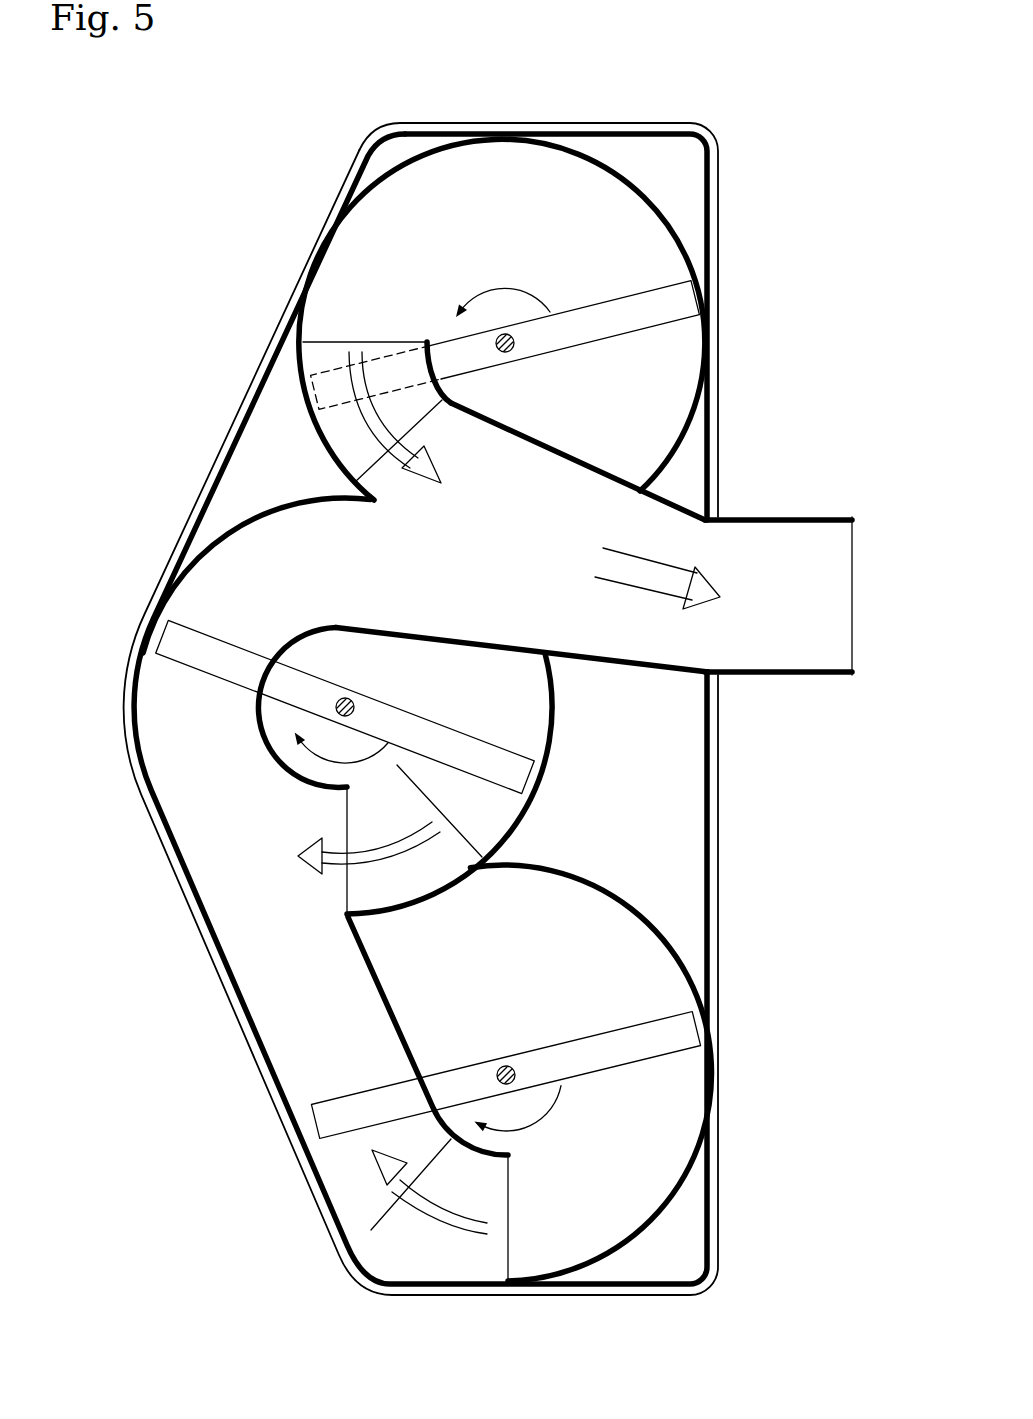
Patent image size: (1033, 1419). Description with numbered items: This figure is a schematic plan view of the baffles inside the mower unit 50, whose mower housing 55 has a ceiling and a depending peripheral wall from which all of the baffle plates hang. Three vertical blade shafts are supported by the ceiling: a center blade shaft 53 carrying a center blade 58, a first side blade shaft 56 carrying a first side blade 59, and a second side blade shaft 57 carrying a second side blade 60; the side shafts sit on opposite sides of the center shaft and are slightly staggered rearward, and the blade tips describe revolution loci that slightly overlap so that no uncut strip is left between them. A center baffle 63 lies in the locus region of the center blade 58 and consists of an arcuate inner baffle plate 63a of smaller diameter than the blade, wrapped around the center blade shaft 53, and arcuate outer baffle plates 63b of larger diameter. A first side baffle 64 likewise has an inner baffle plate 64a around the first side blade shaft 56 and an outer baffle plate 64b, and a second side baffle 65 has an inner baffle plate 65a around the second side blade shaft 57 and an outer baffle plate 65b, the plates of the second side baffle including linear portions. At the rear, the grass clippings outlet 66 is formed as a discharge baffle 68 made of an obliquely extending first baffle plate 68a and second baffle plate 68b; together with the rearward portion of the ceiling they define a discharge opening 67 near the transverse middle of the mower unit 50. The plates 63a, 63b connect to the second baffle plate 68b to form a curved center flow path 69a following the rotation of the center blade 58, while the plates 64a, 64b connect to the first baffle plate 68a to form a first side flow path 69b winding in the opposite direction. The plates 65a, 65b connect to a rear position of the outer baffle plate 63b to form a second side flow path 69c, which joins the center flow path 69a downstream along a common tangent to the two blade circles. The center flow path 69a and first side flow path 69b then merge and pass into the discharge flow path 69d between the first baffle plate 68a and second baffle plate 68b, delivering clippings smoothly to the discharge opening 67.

The mower unit 50 is at (182, 452).
The center blade shaft 53 is at (358, 707).
The mower housing 55 is at (715, 758).
The first side blade shaft 56 is at (513, 350).
The second side blade shaft 57 is at (505, 1062).
The center blade 58 is at (478, 745).
The first side blade 59 is at (616, 313).
The second side blade 60 is at (612, 1025).
The center baffle 63 is at (388, 668).
The inner baffle plate 63a is at (277, 752).
The outer baffle plate 63b is at (565, 765).
The first side baffle 64 is at (502, 279).
The inner baffle plate 64a is at (440, 340).
The outer baffle plate 64b is at (412, 153).
The second side baffle 65 is at (530, 1056).
The inner baffle plate 65a is at (428, 1115).
The outer baffle plate 65b is at (650, 1212).
The grass clippings outlet 66 is at (801, 584).
The discharge opening 67 is at (858, 640).
The discharge baffle 68 is at (792, 514).
The first baffle plate 68a is at (670, 517).
The second baffle plate 68b is at (668, 678).
The center flow path 69a is at (345, 878).
The first side flow path 69b is at (414, 455).
The second side flow path 69c is at (470, 1200).
The discharge flow path 69d is at (667, 597).